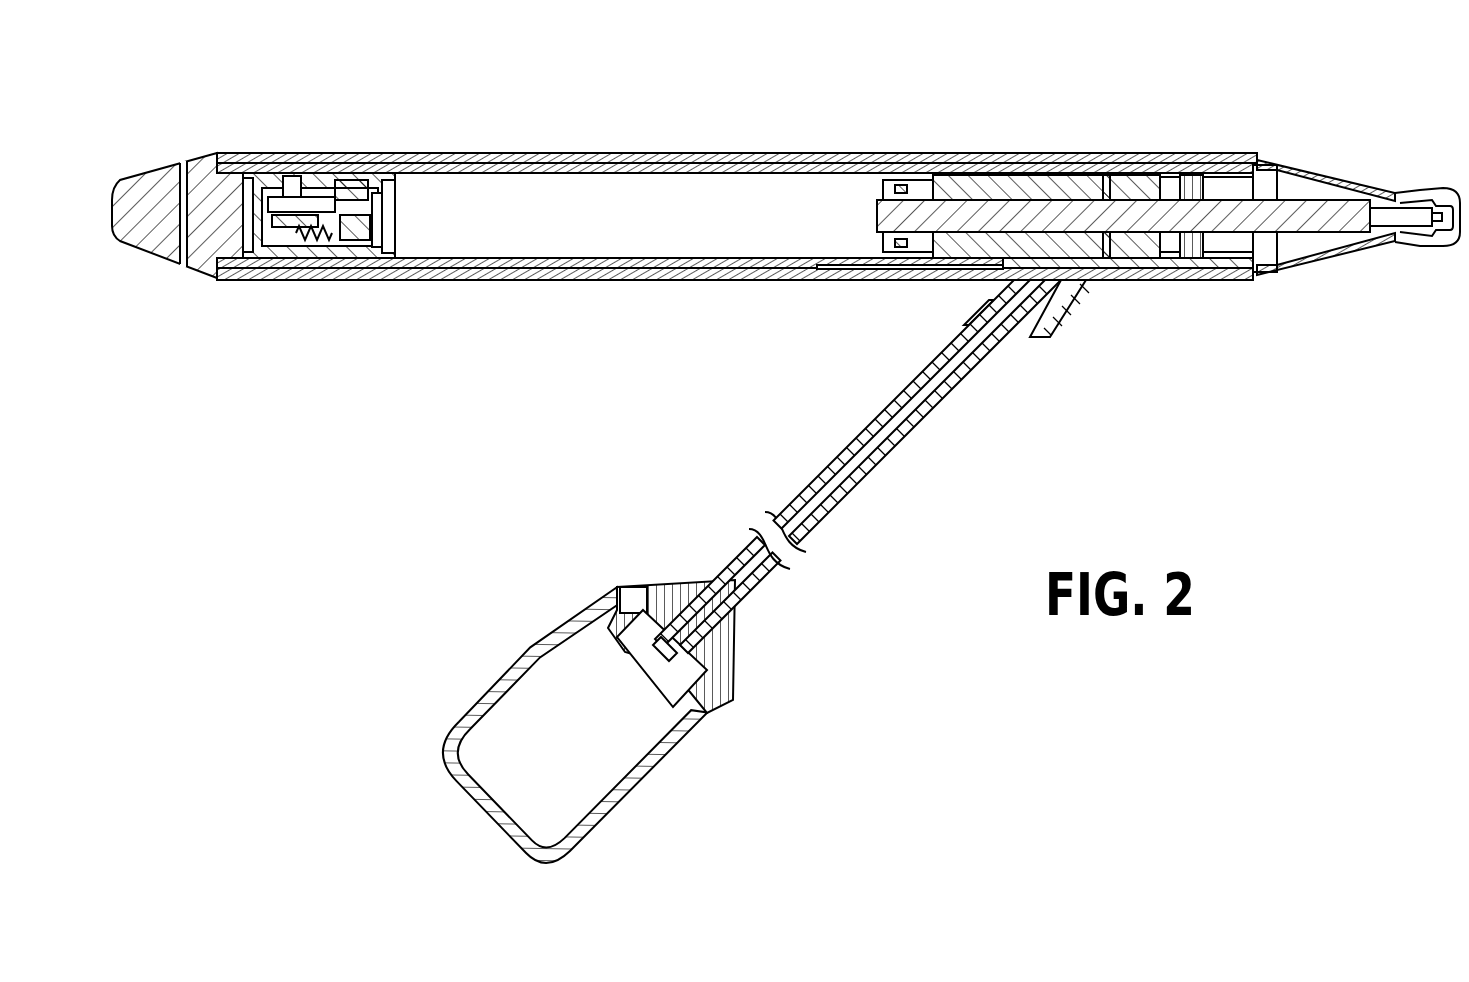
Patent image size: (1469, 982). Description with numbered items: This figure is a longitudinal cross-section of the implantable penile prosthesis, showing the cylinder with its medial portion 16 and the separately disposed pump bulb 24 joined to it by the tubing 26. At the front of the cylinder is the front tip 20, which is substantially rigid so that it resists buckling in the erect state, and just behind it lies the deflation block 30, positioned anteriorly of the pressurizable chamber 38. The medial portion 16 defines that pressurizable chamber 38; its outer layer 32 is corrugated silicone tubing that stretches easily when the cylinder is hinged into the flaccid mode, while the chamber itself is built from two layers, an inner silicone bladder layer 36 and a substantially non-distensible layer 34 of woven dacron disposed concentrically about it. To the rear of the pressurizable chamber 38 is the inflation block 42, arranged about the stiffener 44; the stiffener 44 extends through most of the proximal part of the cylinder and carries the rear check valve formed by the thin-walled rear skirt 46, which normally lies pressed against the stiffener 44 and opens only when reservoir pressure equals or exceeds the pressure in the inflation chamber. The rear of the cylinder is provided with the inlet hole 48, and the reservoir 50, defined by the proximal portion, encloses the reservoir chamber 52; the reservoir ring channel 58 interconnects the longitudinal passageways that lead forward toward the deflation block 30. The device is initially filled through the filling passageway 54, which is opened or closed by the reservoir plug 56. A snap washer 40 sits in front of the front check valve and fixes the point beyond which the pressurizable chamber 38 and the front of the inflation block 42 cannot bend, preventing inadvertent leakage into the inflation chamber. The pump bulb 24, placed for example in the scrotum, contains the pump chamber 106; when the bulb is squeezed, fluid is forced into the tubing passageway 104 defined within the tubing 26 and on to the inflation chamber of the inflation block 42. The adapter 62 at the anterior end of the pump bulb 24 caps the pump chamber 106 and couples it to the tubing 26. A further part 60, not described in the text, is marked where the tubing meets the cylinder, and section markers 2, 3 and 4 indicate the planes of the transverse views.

The section line 2- 2 is at (254, 206).
The section line 3- 3 is at (1223, 82).
The section line 4- 4 is at (904, 215).
The medial portion 16 is at (812, 290).
The front tip 20 is at (121, 176).
The pump bulb 24 is at (633, 817).
The tubing 26 is at (857, 483).
The deflation block 30 is at (208, 152).
The outer layer 32 is at (330, 155).
The non-distensible layer 34 is at (478, 158).
The inner layer 36 is at (560, 172).
The pressurizable chamber 38 is at (667, 198).
The snap washer 40 is at (873, 200).
The inflation block 42 is at (975, 175).
The stiffener 44 is at (1058, 158).
The rear skirt 46 is at (1132, 158).
The inlet hole 48 is at (1193, 158).
The reservoir 50 is at (1273, 160).
The reservoir chamber 52 is at (1333, 160).
The filling passageway 54 is at (1438, 190).
The reservoir plug 56 is at (1445, 264).
The reservoir ring channel 58 is at (1200, 282).
The sleeve 60 is at (1053, 307).
The adapter 62 is at (732, 648).
The tubing passageway 104 is at (830, 477).
The pump chamber 106 is at (528, 730).